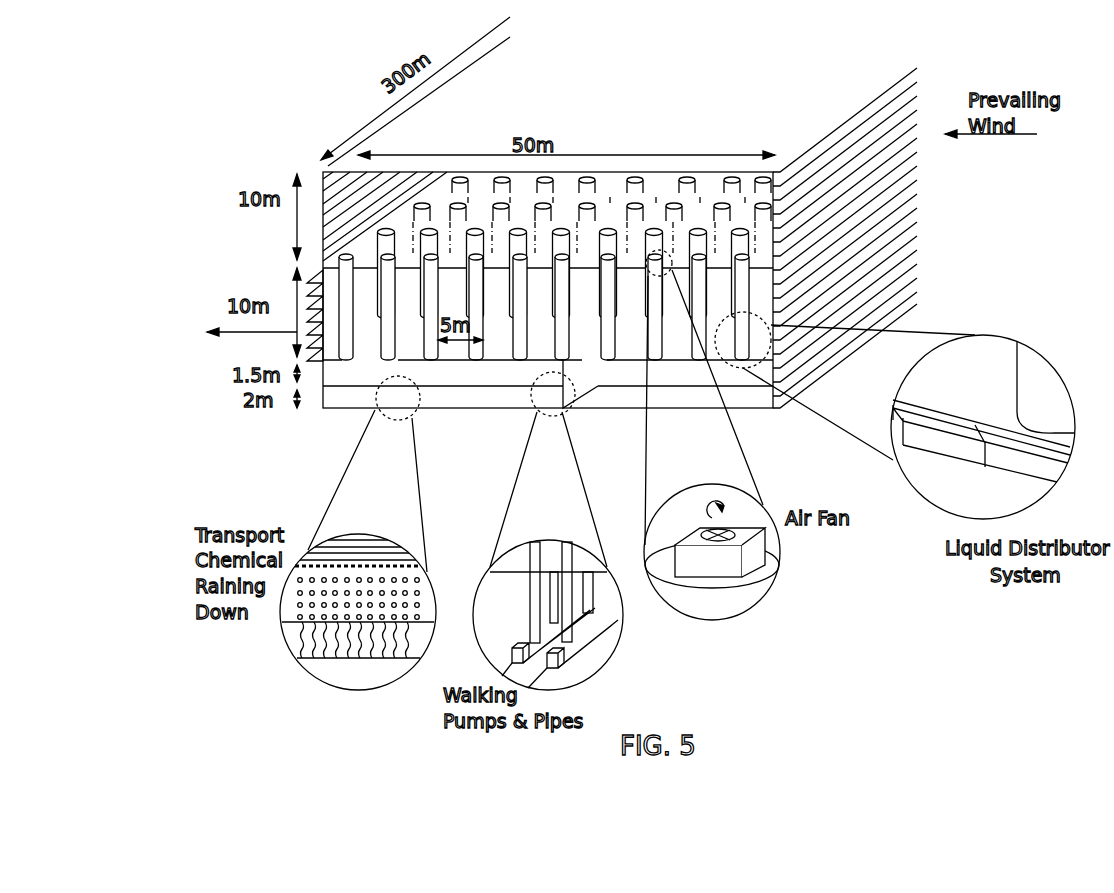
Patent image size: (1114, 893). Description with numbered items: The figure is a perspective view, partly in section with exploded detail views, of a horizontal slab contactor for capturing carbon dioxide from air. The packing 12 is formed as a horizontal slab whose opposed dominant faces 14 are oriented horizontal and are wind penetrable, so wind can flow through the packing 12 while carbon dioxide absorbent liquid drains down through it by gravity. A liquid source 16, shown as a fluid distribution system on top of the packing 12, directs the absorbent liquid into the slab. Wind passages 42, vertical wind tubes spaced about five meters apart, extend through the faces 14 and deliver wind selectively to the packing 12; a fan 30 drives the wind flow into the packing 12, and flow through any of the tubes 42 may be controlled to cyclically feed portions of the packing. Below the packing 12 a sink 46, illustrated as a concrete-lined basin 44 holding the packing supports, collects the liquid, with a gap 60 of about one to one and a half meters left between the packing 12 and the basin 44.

The packing 12 is at (774, 409).
The opposed dominant faces 14 is at (720, 364).
The liquid source 16 is at (1066, 456).
The fan 30 is at (761, 551).
The wind passage 42 is at (484, 286).
The basin 44 is at (472, 412).
The sink 46 is at (340, 412).
The gap 60 is at (481, 381).